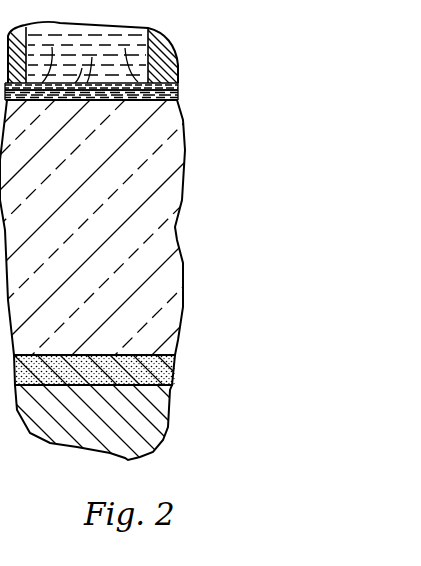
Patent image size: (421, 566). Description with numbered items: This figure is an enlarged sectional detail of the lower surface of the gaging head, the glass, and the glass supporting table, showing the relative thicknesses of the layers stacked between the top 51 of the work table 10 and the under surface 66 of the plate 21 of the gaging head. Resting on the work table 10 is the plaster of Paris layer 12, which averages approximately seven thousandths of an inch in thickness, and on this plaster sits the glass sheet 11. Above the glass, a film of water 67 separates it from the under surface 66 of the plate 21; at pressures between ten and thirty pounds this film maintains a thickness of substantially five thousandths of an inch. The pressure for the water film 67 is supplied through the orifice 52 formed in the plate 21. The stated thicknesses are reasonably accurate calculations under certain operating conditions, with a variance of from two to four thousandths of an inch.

The work table 10 is at (140, 421).
The body layer 11 is at (141, 268).
The plaster of Paris layer 12 is at (152, 373).
The plate 21 is at (158, 68).
The top of the work table 51 is at (80, 387).
The orifice 52 is at (131, 44).
The under surface of the plate 66 is at (176, 84).
The film of water 67 is at (183, 93).